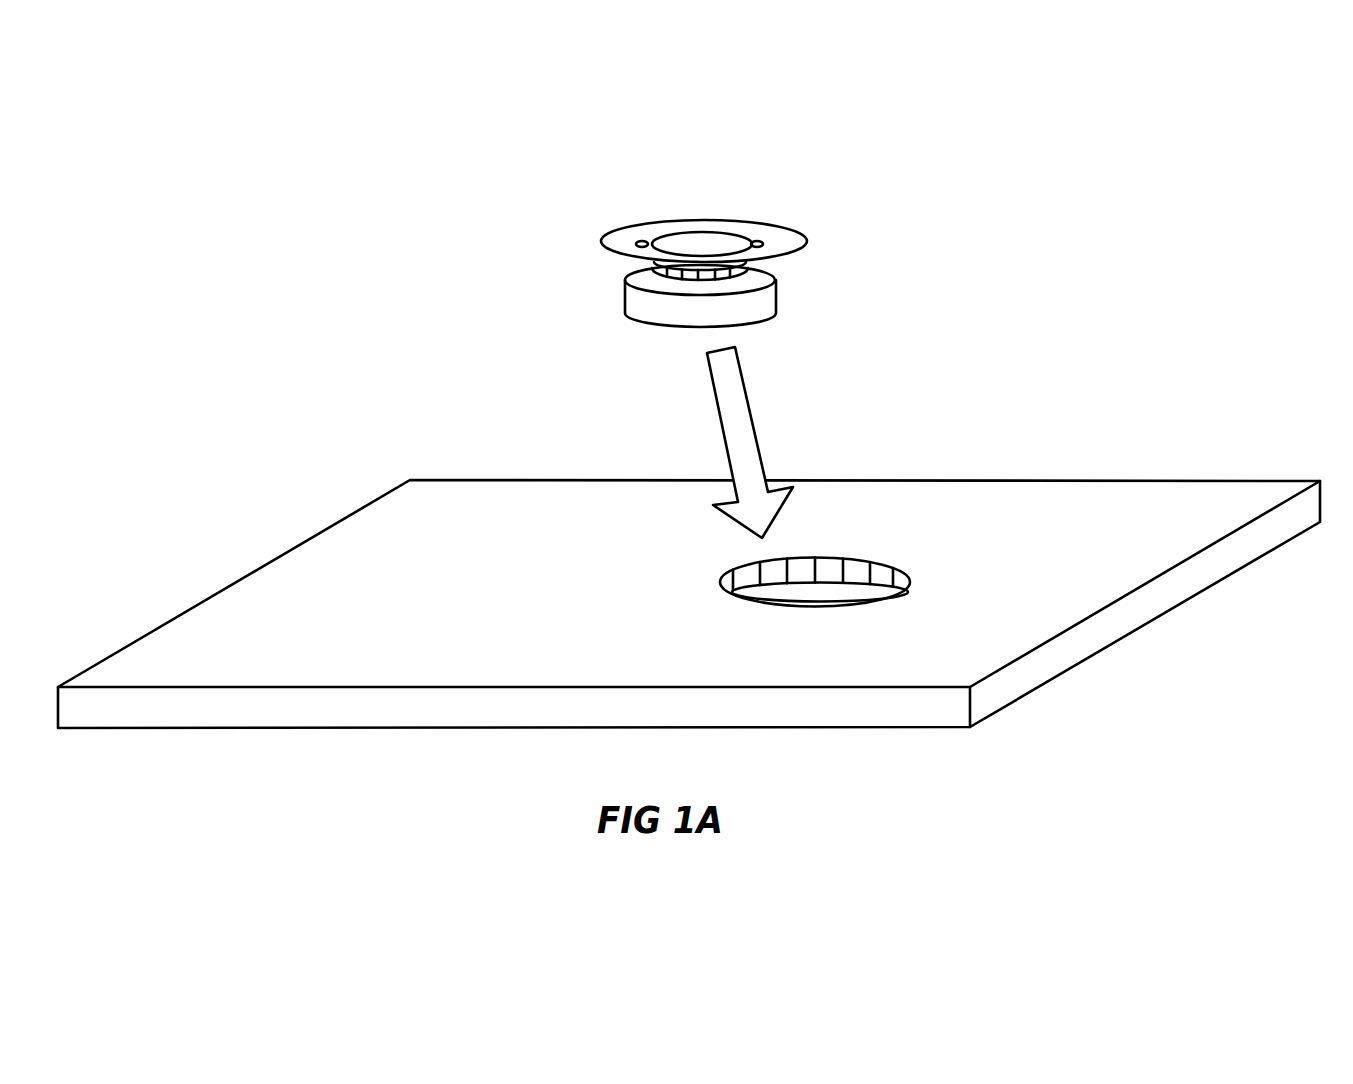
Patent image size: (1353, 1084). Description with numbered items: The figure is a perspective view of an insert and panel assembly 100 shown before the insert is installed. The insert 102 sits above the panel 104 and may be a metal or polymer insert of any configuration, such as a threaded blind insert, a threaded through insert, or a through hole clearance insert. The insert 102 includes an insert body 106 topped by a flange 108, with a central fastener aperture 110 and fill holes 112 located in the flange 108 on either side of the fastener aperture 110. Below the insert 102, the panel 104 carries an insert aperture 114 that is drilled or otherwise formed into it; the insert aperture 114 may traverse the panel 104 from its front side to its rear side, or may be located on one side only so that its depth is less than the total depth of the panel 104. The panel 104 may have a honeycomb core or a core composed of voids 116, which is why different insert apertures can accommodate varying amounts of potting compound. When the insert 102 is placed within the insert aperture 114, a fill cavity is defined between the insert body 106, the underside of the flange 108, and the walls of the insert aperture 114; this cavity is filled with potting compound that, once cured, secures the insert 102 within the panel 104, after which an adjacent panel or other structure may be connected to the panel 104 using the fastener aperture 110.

The insert and panel assembly 100 is at (1252, 188).
The insert 102 is at (568, 260).
The panel 104 is at (1093, 485).
The insert body 106 is at (770, 315).
The flange 108 is at (782, 242).
The fastener aperture 110 is at (695, 246).
The fill holes 112 is at (643, 241).
The insert aperture 114 is at (827, 555).
The voids 116 is at (877, 580).